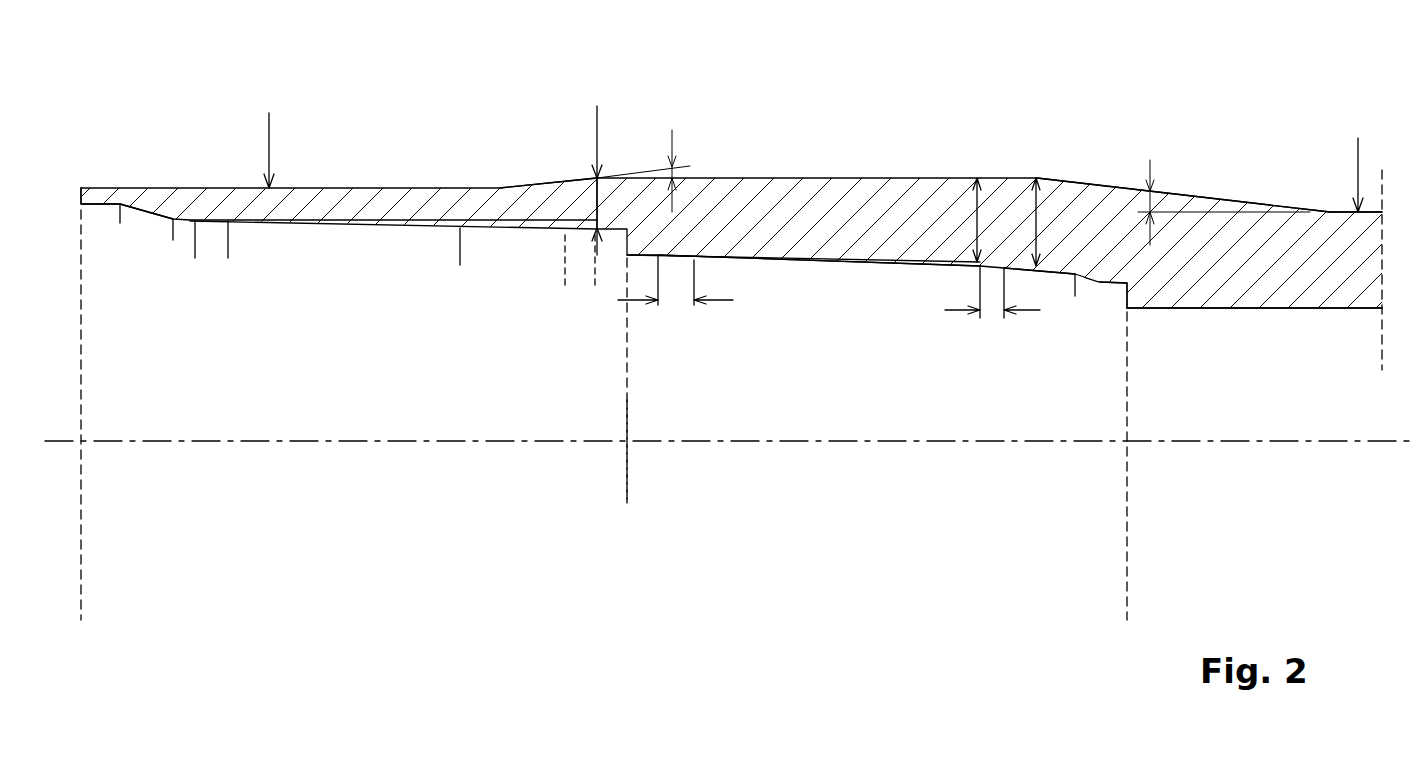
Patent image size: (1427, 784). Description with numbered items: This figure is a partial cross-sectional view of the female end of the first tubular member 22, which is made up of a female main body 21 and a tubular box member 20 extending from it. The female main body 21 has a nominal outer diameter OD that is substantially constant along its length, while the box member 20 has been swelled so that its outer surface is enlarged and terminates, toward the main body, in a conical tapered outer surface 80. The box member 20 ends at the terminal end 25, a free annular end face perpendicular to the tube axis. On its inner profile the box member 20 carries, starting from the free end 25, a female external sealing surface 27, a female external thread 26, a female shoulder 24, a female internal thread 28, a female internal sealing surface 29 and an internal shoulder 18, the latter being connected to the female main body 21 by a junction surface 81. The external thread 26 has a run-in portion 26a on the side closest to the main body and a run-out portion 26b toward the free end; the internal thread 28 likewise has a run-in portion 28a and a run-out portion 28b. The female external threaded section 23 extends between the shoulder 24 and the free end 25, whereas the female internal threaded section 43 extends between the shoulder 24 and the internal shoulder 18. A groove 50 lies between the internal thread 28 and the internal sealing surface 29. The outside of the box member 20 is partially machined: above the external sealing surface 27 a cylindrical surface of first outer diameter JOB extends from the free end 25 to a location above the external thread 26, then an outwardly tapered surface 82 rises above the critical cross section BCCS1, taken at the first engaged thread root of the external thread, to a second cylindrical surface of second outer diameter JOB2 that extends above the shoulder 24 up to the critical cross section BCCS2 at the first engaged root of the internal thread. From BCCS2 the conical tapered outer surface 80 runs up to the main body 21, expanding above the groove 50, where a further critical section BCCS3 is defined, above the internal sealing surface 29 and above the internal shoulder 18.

The box member 20 is at (1127, 628).
The female external threaded section 23 is at (81, 505).
The female internal threaded section 43 is at (1127, 505).
The terminal end 25 is at (99, 196).
The female external sealing surface 27 is at (148, 208).
The female external thread 26 is at (362, 223).
The run-in portion 26a is at (595, 290).
The run-out portion 26b is at (195, 258).
The outwardly tapered surface 82 is at (524, 186).
The female shoulder 24 is at (627, 243).
The female internal thread 28 is at (825, 264).
The run-in portion 28a is at (995, 318).
The run-out portion 28b is at (677, 305).
The groove 50 is at (1012, 268).
The female internal sealing surface 29 is at (1093, 283).
The internal shoulder 18 is at (1125, 298).
The conical tapered outer surface 80 is at (1070, 178).
The junction surface 81 is at (1243, 310).
The female main body 21 is at (1358, 262).
The first tubular member 22 is at (1214, 98).
The first outer diameter JOB is at (269, 133).
The second outer diameter JOB2 is at (597, 120).
The box critical cross section BCCS1 is at (597, 204).
The box critical cross section BCCS2 is at (977, 218).
The box critical cross section BCCS3 is at (1036, 222).
The outer diameter OD is at (1358, 158).